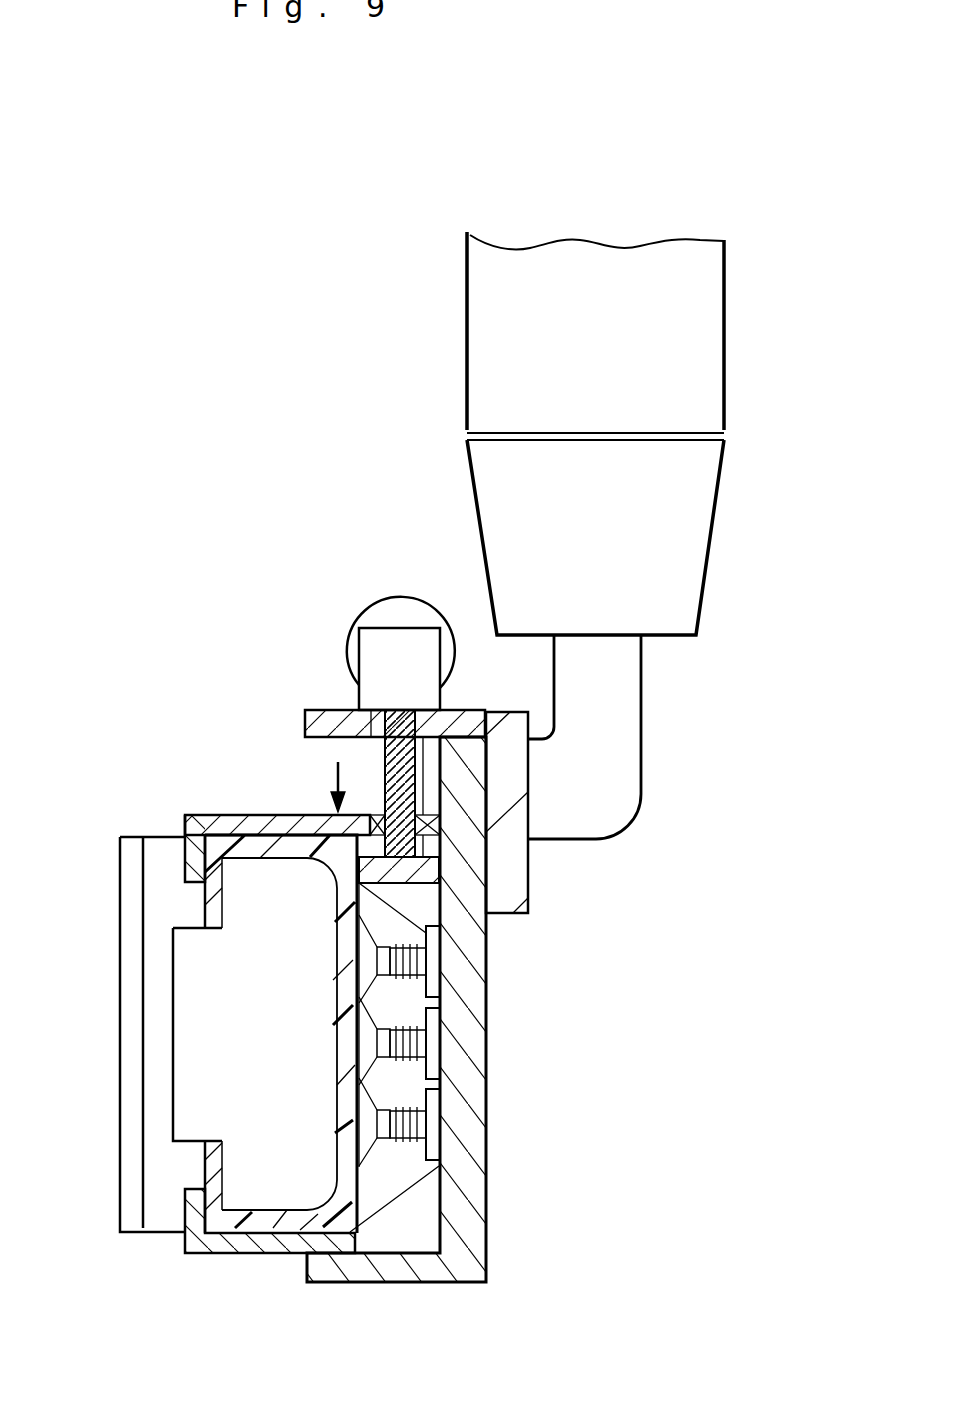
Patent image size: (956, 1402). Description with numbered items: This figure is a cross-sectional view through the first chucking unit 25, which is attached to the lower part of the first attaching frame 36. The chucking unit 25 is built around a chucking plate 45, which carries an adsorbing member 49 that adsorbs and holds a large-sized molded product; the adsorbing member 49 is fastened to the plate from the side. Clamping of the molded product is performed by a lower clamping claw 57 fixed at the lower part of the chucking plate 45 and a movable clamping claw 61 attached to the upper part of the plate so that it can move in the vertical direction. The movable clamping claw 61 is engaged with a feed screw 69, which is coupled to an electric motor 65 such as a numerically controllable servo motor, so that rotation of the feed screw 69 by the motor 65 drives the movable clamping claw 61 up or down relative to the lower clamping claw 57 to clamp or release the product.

The first attaching frame 36 is at (528, 353).
The electric motor 65 is at (405, 610).
The feed screw 69 is at (387, 768).
The movable clamping claw 61 is at (185, 815).
The chucking plate 45 is at (463, 1056).
The adsorbing member 49 is at (367, 970).
The lower clamping claw 57 is at (228, 1243).
The first chucking unit 25 is at (485, 1225).